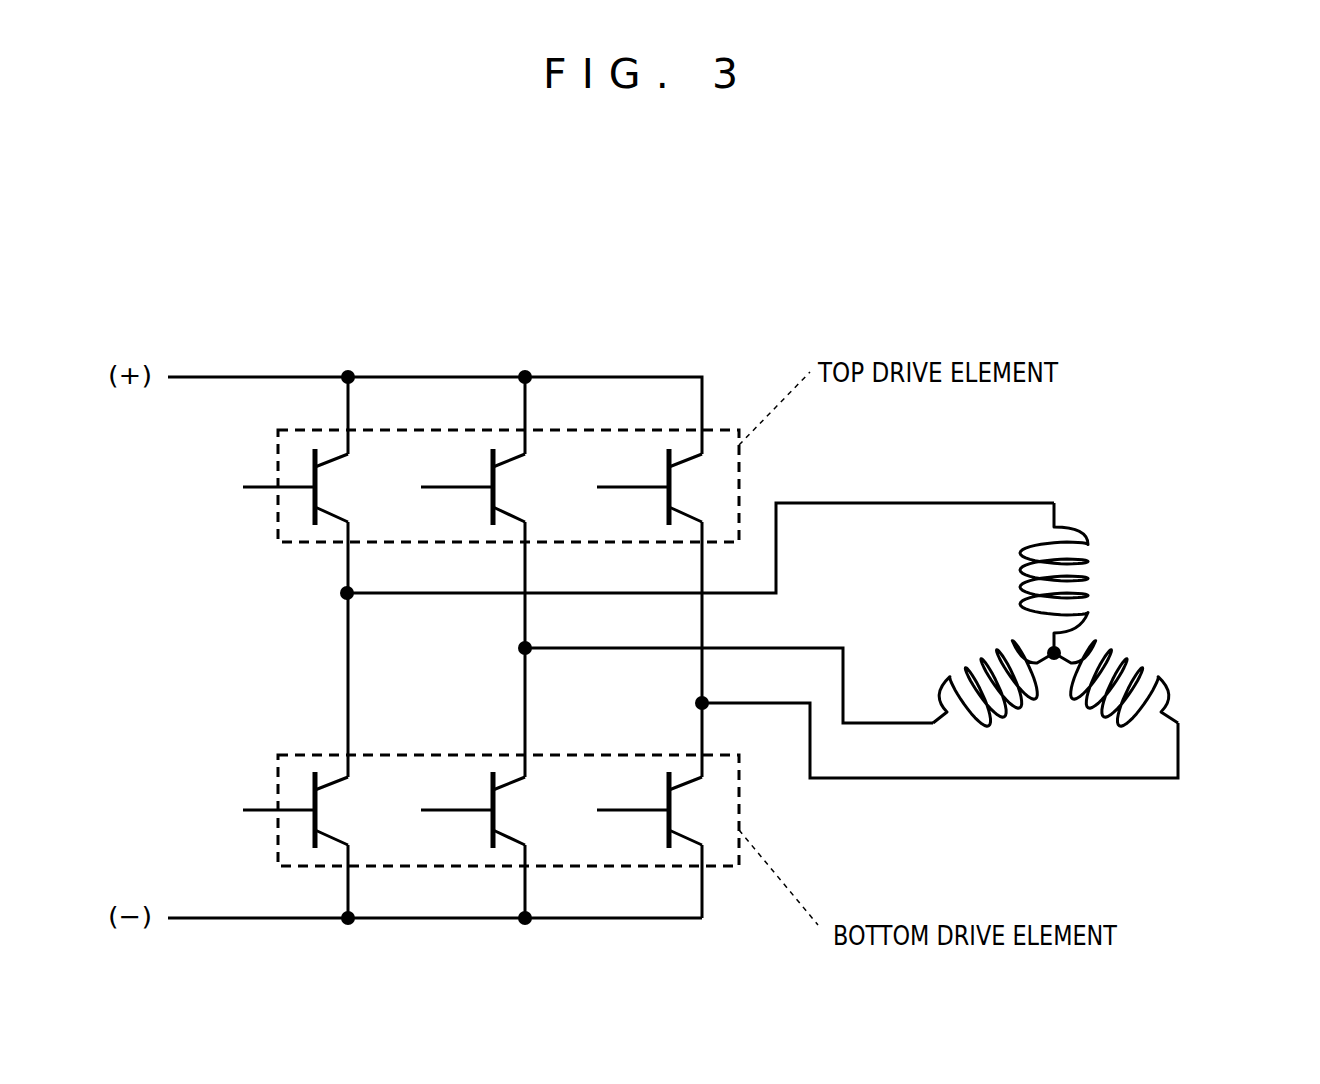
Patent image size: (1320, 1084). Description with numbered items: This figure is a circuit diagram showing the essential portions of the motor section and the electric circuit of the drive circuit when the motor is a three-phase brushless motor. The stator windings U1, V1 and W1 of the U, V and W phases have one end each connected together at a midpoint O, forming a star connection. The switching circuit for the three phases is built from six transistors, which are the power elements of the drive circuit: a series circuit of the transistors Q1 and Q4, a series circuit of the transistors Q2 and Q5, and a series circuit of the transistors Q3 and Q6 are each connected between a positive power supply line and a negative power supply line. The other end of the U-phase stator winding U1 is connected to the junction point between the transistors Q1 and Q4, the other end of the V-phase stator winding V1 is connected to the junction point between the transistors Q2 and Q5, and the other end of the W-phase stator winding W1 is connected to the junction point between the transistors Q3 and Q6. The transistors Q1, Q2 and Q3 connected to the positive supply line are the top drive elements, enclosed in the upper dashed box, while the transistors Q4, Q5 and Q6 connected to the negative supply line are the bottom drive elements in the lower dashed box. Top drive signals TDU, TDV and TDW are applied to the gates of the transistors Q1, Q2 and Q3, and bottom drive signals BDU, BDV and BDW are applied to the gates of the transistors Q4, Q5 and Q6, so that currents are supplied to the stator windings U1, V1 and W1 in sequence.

The transistor Q1 is at (346, 487).
The transistor Q2 is at (522, 487).
The transistor Q3 is at (693, 487).
The transistor Q4 is at (341, 810).
The transistor Q5 is at (519, 810).
The transistor Q6 is at (693, 810).
The top drive signal TDU is at (255, 487).
The top drive signal TDV is at (468, 487).
The top drive signal TDW is at (637, 487).
The bottom drive signal BDU is at (262, 810).
The bottom drive signal BDV is at (463, 810).
The bottom drive signal BDW is at (635, 810).
The stator winding U1 is at (1088, 562).
The stator winding V1 is at (960, 667).
The stator winding W1 is at (1150, 673).
The midpoint O is at (1060, 650).